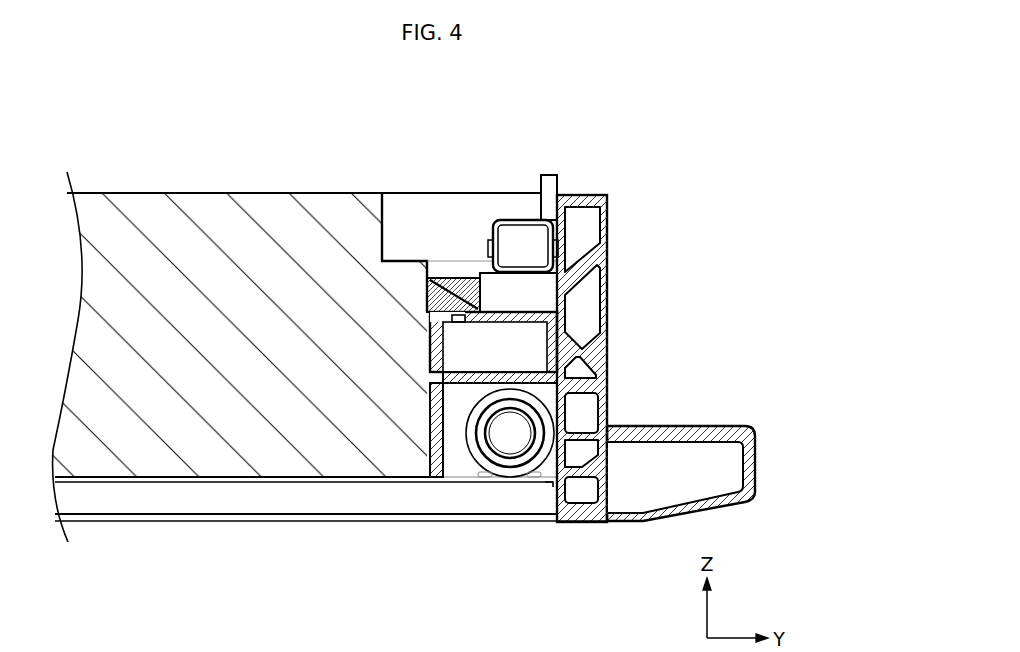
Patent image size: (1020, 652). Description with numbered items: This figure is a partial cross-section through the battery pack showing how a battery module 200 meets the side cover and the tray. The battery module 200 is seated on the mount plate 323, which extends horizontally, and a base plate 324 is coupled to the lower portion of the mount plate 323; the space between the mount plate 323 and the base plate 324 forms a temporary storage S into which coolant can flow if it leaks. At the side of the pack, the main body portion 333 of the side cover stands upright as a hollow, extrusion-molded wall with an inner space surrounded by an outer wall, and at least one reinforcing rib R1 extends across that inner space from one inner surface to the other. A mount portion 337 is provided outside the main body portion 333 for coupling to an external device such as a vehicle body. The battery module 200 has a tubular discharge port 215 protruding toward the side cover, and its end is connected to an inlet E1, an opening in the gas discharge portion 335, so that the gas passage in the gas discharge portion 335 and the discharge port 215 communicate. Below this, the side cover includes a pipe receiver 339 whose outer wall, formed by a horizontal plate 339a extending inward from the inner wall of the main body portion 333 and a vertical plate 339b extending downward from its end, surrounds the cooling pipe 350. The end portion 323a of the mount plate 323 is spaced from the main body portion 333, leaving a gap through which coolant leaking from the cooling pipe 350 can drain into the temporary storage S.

The battery module 200 is at (214, 148).
The discharge port 215 is at (440, 295).
The inlet E1 is at (458, 315).
The main body portion 333 is at (612, 358).
The reinforcing rib R1 is at (600, 290).
The cooling pipe 350 is at (538, 407).
The mount portion 337 is at (757, 465).
The mount plate 323 is at (121, 483).
The base plate 324 is at (190, 521).
The temporary storage S is at (246, 504).
The gas discharge portion 335 is at (437, 350).
The pipe receiver 339 is at (467, 494).
The horizontal plate 339a is at (455, 383).
The vertical plate 339b is at (411, 475).
The end portion of the mount plate 323a is at (553, 484).